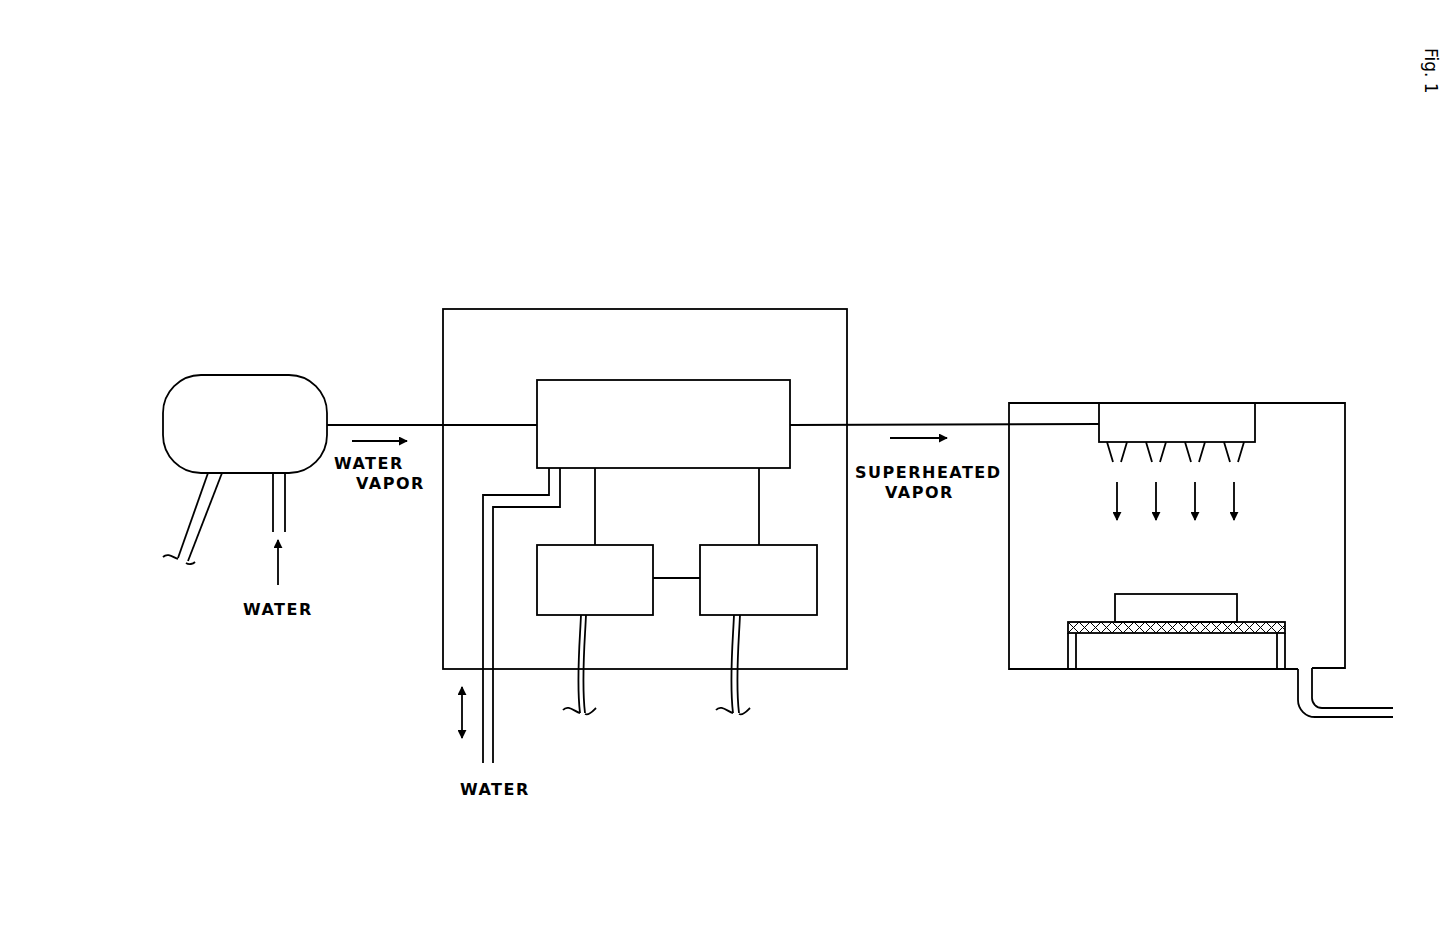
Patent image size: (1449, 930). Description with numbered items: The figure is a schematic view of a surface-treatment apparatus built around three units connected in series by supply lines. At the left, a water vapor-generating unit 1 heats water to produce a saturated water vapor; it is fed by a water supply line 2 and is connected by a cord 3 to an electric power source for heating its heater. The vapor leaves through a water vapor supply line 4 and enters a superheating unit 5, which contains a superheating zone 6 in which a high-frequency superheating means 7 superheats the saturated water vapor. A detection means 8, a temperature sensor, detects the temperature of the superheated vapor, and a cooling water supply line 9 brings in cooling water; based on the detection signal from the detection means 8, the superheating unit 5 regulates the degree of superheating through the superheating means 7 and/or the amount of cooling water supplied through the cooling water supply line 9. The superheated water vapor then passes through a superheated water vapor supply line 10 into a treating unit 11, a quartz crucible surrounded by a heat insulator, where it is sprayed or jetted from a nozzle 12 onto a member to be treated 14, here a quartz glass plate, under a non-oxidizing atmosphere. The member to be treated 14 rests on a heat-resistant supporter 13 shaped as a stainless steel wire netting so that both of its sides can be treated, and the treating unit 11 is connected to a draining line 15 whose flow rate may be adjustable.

The water vapor-generating unit 1 is at (258, 375).
The water supply line 2 is at (285, 510).
The cord 3 is at (186, 525).
The water vapor supply line 4 is at (365, 425).
The superheating unit 5 is at (705, 309).
The superheating zone 6 is at (725, 380).
The superheating means 7 is at (617, 545).
The detection means 8 is at (783, 545).
The cooling water supply line 9 is at (483, 746).
The superheated water vapor supply line 10 is at (905, 423).
The treating unit 11 is at (1293, 403).
The nozzle 12 is at (1168, 418).
The heat-resistant supporter 13 is at (1193, 633).
The member to be treated 14 is at (1148, 610).
The draining line 15 is at (1363, 720).